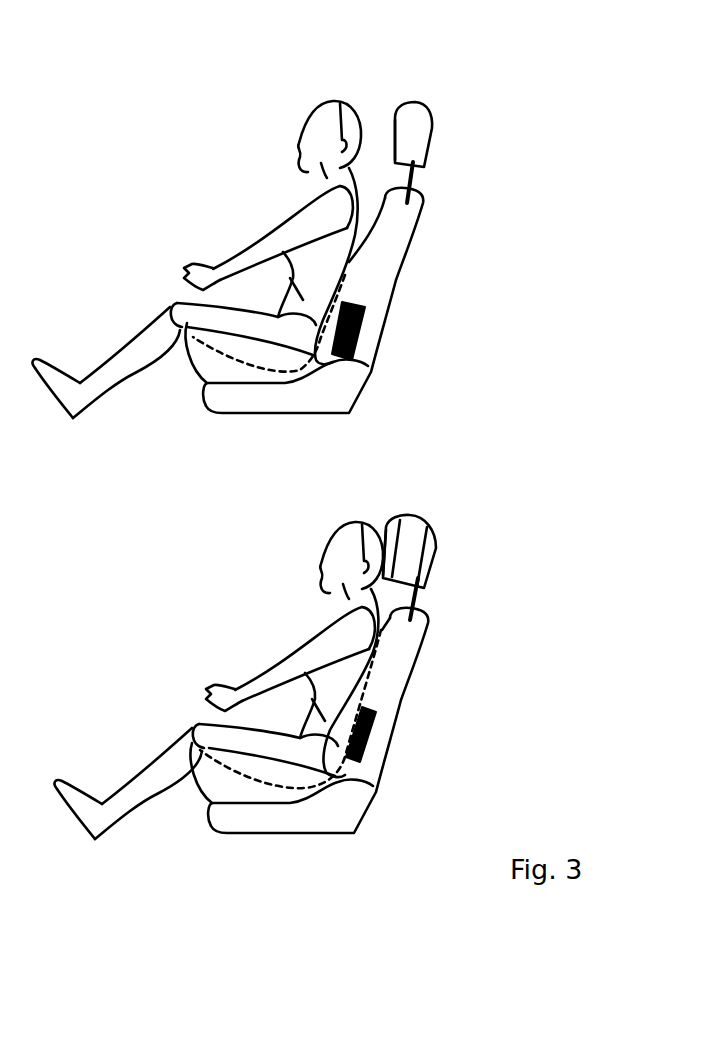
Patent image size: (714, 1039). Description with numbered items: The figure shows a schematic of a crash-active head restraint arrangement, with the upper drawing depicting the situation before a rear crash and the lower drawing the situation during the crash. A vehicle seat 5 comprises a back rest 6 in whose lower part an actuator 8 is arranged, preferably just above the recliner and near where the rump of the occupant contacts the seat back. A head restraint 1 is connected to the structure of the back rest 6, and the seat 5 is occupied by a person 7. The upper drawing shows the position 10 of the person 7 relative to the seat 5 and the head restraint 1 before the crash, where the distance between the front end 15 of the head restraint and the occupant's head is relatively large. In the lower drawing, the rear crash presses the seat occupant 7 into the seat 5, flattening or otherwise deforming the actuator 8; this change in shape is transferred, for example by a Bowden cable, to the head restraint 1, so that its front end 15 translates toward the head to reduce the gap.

The head restraint 1 is at (420, 145).
The vehicle seat 5 is at (450, 238).
The back rest 6 is at (377, 280).
The person 7 is at (313, 250).
The actuator 8 is at (373, 338).
The position 10 is at (446, 102).
The front end of the head restraint 15 is at (396, 117).